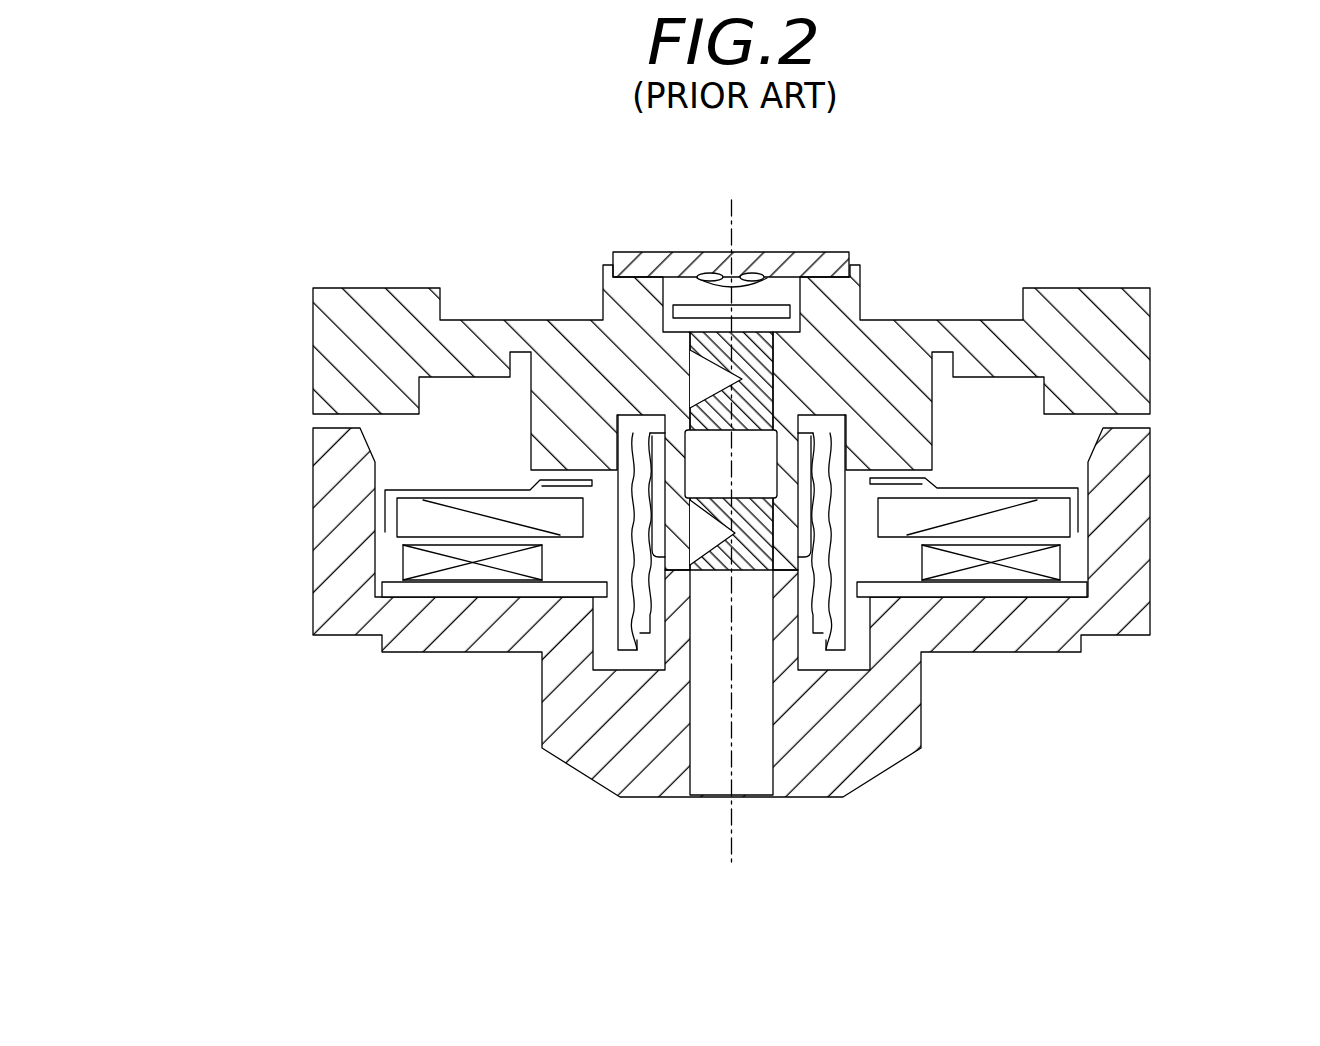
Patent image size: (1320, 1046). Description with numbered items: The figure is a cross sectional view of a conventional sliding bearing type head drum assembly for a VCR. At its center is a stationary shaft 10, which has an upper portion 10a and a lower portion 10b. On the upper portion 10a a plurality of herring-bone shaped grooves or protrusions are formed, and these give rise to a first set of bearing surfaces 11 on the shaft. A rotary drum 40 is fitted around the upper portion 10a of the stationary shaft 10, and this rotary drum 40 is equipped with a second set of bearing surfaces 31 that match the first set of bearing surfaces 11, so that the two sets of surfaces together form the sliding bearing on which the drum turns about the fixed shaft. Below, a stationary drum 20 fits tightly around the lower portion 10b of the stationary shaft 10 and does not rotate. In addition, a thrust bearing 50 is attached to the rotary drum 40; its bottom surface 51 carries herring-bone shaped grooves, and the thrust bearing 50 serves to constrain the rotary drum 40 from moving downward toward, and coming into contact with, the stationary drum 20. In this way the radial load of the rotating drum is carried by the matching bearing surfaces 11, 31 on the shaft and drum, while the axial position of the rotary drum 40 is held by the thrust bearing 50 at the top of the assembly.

The stationary shaft 10 is at (733, 770).
The upper portion 10a is at (1179, 571).
The lower portion 10b is at (1179, 571).
The first set of bearing surfaces 11 is at (773, 378).
The stationary drum 20 is at (557, 745).
The second set of bearing surfaces 31 is at (773, 407).
The rotary drum 40 is at (325, 338).
The thrust bearing 50 is at (748, 270).
The bottom surface 51 is at (712, 272).